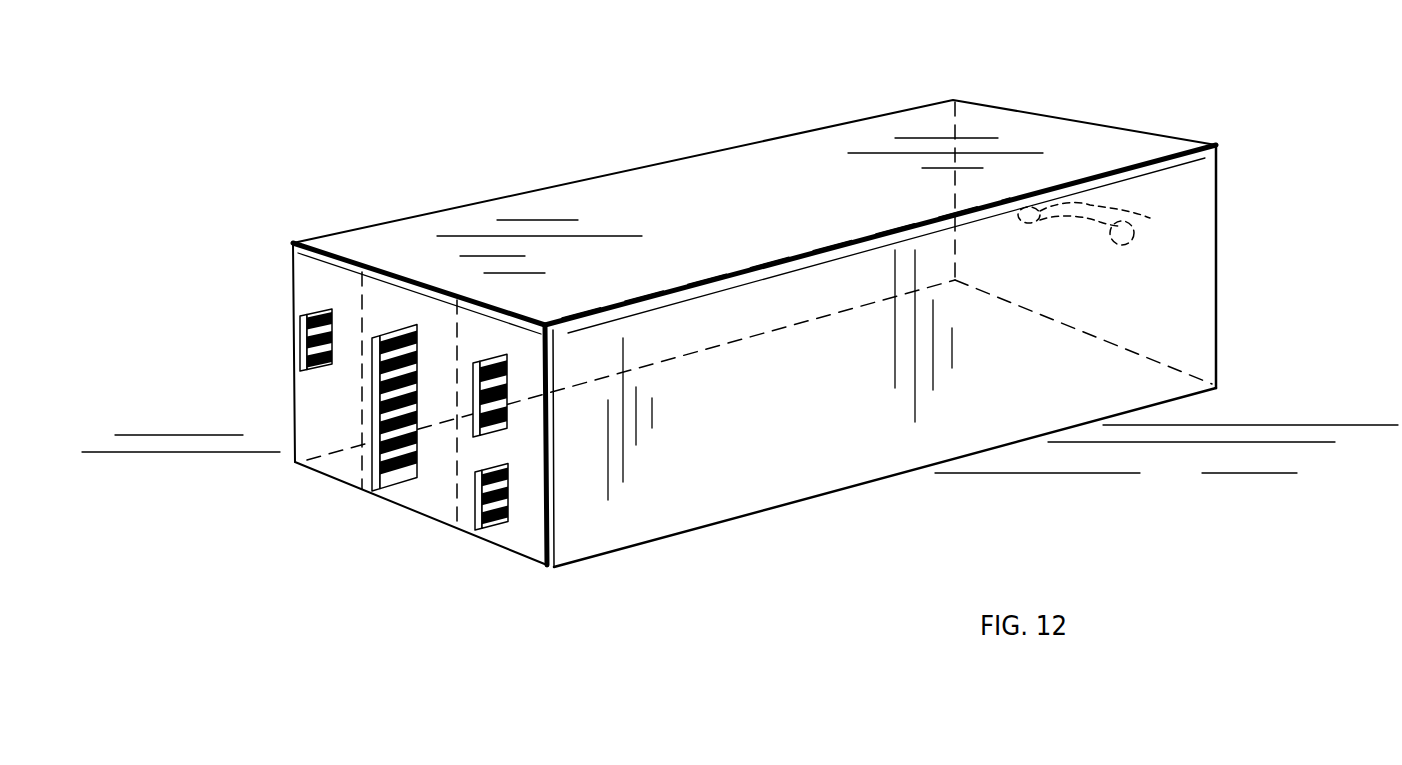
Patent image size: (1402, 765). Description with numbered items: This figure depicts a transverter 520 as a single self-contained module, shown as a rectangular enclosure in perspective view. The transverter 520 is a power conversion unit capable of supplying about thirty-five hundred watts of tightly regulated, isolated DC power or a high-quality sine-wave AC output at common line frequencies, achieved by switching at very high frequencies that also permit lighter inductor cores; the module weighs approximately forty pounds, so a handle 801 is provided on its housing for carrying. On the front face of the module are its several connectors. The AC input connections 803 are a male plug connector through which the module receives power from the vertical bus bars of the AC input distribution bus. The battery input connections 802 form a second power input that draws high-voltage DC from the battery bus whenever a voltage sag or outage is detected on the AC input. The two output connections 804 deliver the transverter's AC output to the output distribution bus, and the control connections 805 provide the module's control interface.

The transverter 520 is at (843, 130).
The handle 801 is at (1150, 220).
The battery input connections 802 is at (500, 530).
The AC input connections 803 is at (490, 355).
The output connections 804 is at (300, 372).
The control connections 805 is at (380, 490).